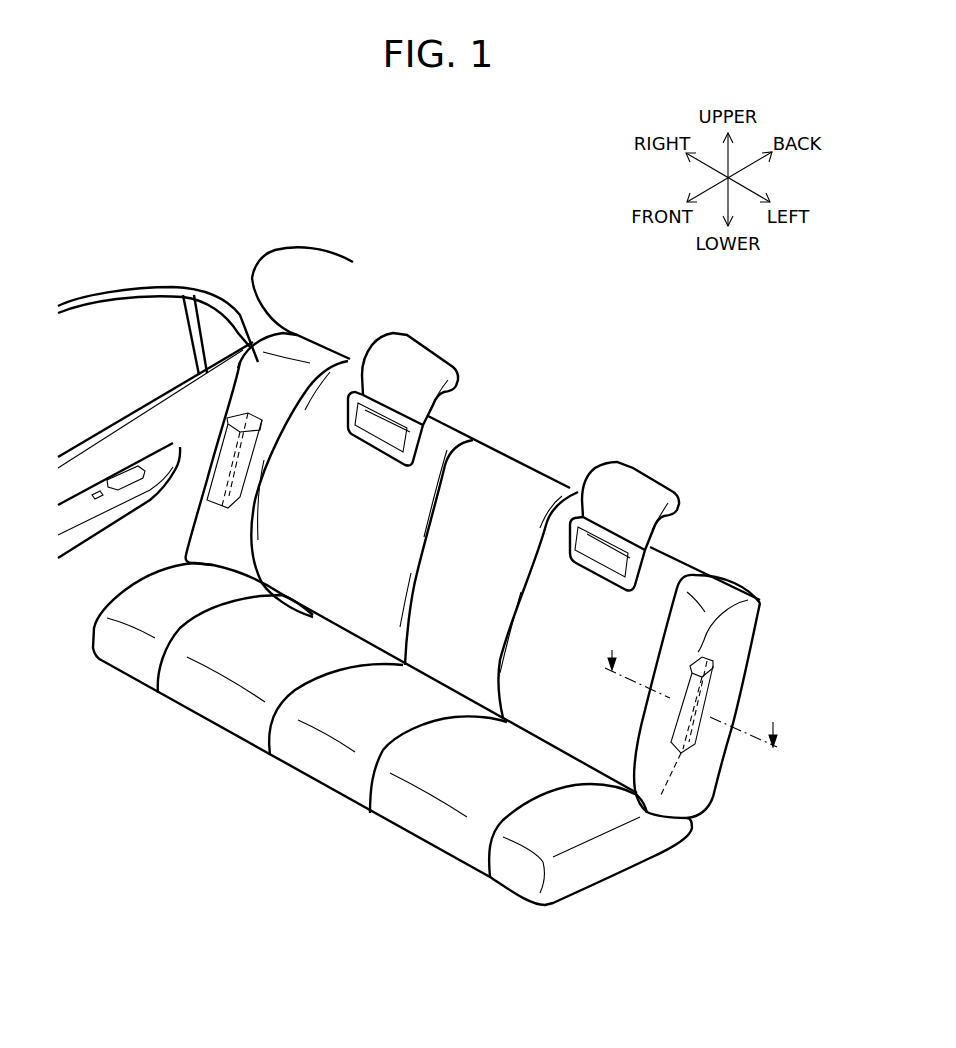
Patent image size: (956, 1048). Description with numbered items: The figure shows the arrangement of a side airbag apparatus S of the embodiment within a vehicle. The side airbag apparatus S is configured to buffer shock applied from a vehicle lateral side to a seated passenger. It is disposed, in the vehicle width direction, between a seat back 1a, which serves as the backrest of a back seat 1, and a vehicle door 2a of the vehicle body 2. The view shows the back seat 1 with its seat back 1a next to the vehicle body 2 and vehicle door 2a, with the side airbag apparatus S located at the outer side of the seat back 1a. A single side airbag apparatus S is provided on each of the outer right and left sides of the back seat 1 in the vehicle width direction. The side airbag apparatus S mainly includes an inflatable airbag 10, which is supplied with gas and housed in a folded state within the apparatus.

The back seat 1 is at (458, 619).
The seat back 1a is at (513, 478).
The vehicle body 2 is at (205, 379).
The vehicle door 2a is at (150, 437).
The airbag 10 is at (705, 692).
The side airbag apparatus S is at (729, 662).